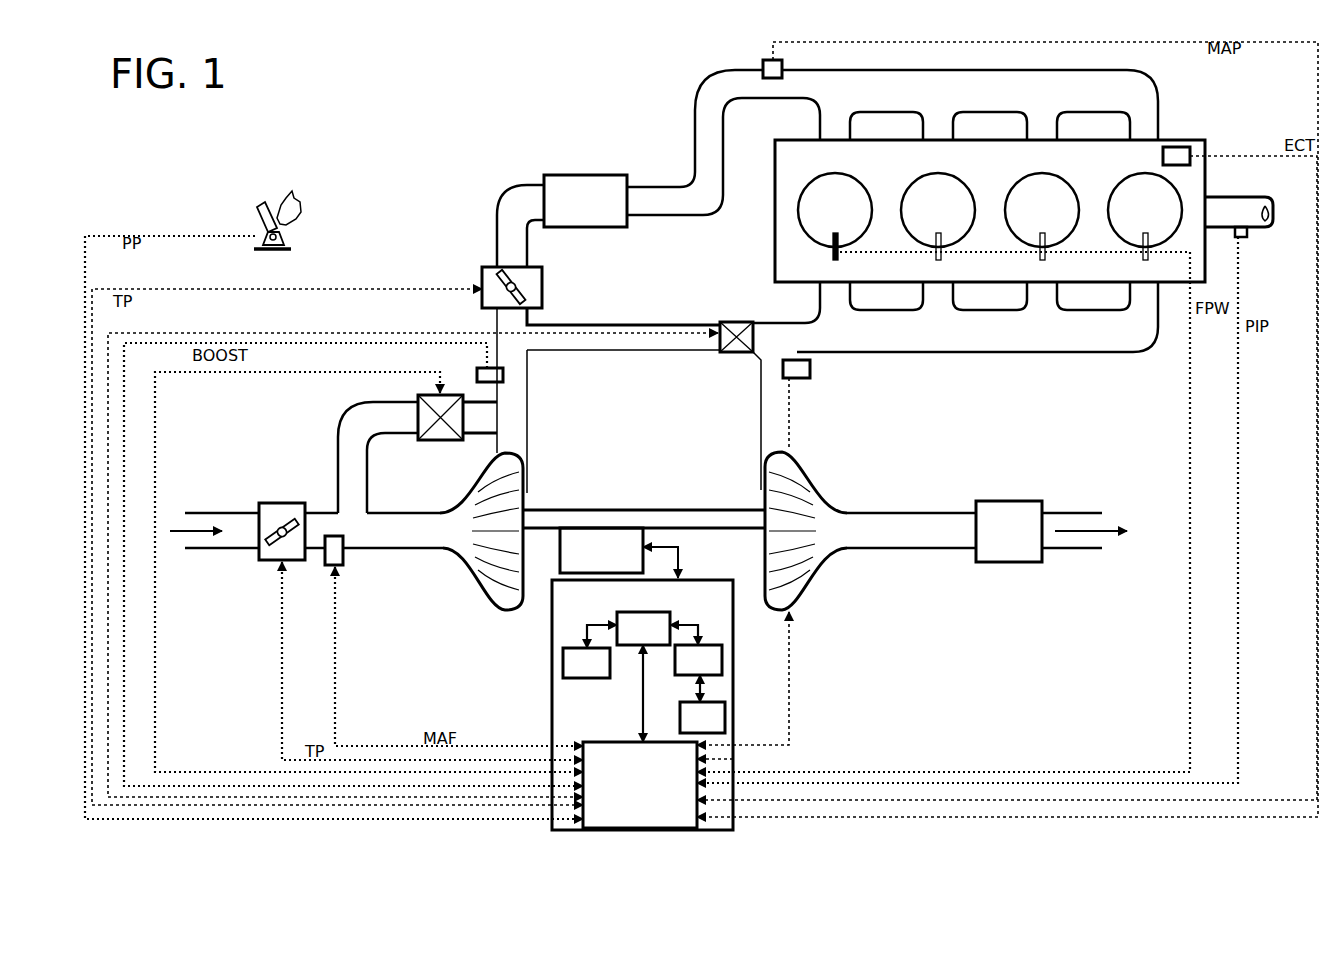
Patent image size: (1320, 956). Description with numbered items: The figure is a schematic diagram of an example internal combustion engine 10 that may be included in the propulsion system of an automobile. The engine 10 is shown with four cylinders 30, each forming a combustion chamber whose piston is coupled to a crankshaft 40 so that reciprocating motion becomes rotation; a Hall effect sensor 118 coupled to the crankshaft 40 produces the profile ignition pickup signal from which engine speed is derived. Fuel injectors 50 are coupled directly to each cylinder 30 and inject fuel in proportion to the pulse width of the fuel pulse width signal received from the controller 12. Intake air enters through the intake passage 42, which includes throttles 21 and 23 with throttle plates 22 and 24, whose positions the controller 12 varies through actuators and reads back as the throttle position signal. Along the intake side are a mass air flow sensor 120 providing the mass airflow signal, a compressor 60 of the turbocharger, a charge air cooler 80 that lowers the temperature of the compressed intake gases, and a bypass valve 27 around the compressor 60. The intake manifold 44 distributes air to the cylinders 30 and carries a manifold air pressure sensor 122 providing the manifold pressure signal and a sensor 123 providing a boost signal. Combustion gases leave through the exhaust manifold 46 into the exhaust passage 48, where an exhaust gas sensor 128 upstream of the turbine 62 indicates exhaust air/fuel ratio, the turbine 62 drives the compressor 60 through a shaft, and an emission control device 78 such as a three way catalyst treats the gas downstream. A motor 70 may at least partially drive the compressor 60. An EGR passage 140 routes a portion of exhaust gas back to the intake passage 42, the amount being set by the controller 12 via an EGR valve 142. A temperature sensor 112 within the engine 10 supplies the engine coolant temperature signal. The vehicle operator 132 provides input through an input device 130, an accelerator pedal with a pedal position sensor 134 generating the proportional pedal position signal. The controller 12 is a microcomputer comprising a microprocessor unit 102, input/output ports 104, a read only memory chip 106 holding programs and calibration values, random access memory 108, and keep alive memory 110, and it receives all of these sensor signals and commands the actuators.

The engine 10 is at (1074, 164).
The controller 12 is at (580, 718).
The throttle 21 is at (265, 503).
The throttle plate 22 is at (290, 512).
The throttle 23 is at (484, 267).
The throttle plate 24 is at (538, 299).
The compressor bypass valve 27 is at (418, 398).
The cylinder 30 is at (825, 220).
The crankshaft 40 is at (1248, 197).
The intake passage 42 is at (229, 540).
The intake manifold 44 is at (849, 100).
The exhaust manifold 46 is at (824, 342).
The exhaust passage 48 is at (897, 540).
The fuel injector 50 is at (833, 258).
The compressor 60 is at (485, 578).
The turbine 62 is at (805, 483).
The motor 70 is at (590, 560).
The emission control device 78 is at (998, 540).
The charge air cooler 80 is at (555, 175).
The microprocessor unit 102 is at (617, 618).
The input/output ports 104 is at (654, 813).
The read only memory chip 106 is at (563, 668).
The random access memory 108 is at (722, 650).
The keep alive memory 110 is at (725, 706).
The temperature sensor 112 is at (1185, 147).
The Hall effect sensor 118 is at (1248, 238).
The mass air flow sensor 120 is at (343, 556).
The manifold air pressure sensor 122 is at (763, 62).
The sensor 123 is at (478, 368).
The exhaust gas sensor 128 is at (805, 373).
The input device 130 is at (258, 212).
The vehicle operator 132 is at (302, 203).
The pedal position sensor 134 is at (291, 240).
The EGR passage 140 is at (627, 326).
The EGR valve 142 is at (745, 322).